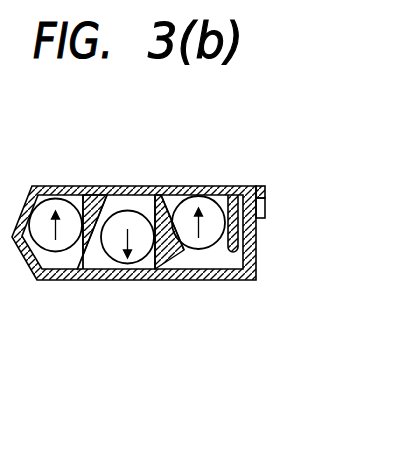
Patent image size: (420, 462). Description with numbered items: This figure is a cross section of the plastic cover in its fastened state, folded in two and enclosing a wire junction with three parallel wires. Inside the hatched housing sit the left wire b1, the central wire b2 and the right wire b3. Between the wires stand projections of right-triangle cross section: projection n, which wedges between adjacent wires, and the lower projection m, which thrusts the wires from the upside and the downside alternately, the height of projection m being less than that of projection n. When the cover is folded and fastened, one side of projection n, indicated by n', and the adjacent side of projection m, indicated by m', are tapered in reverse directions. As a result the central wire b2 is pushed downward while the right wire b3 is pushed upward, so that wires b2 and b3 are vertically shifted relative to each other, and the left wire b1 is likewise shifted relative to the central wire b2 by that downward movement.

The left wire b1 is at (47, 196).
The central wire b2 is at (123, 208).
The right wire b3 is at (221, 186).
The projection m is at (160, 204).
The tapered side of projection m m' is at (189, 200).
The projection n is at (89, 255).
The tapered side of projection n n' is at (111, 255).